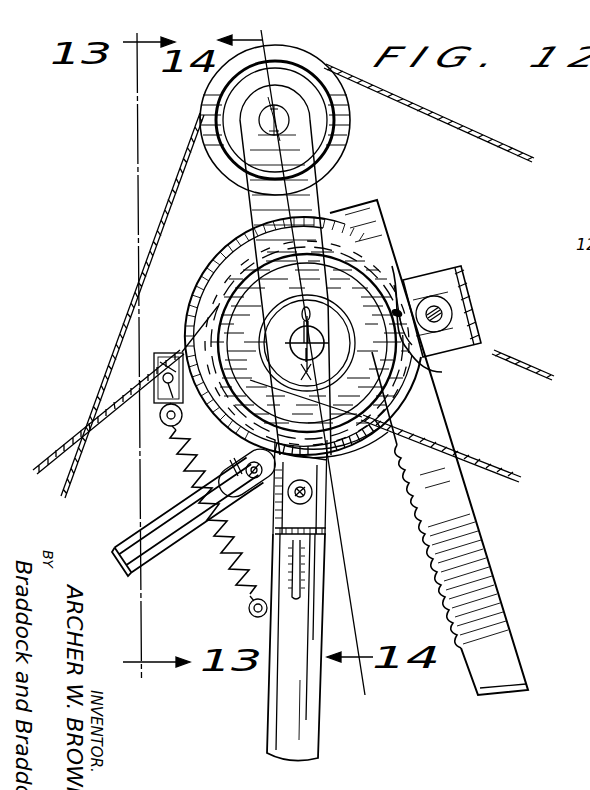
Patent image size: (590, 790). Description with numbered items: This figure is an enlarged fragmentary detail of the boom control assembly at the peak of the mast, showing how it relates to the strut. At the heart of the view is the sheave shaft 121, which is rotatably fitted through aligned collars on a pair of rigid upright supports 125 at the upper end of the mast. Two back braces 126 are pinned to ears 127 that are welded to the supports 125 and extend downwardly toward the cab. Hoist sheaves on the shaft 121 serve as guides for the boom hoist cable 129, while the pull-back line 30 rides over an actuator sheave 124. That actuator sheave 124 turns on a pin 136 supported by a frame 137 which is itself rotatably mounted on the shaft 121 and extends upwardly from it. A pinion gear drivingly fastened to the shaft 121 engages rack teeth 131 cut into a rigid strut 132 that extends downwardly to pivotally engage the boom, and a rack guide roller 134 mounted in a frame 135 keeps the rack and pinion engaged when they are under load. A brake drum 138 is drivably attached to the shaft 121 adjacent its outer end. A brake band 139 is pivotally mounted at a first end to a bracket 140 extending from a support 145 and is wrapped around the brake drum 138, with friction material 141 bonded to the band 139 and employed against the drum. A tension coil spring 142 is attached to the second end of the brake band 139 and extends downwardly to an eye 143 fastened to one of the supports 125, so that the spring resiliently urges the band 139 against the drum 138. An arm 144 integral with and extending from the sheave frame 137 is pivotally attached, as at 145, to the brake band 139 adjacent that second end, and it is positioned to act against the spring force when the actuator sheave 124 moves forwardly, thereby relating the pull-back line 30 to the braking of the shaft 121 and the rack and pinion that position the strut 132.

The pull-back line 30 is at (108, 362).
The sheave shaft 121 is at (312, 300).
The actuator sheave 124 is at (346, 153).
The rigid upright supports 125 is at (345, 735).
The back braces 126 is at (136, 536).
The ears 127 is at (230, 457).
The boom hoist cable 129 is at (42, 460).
The rack teeth 131 is at (430, 542).
The rigid strut 132 is at (527, 683).
The rack guide roller 134 is at (426, 298).
The frame 135 is at (468, 272).
The pin 136 is at (277, 118).
The frame 137 is at (320, 207).
The brake drum 138 is at (340, 480).
The brake band 139 is at (190, 302).
The bracket 140 is at (334, 516).
The friction material 141 is at (437, 393).
The tension coil spring 142 is at (222, 580).
The eye 143 is at (250, 613).
The arm 144 is at (163, 432).
The pivotal attachment 145 is at (162, 352).